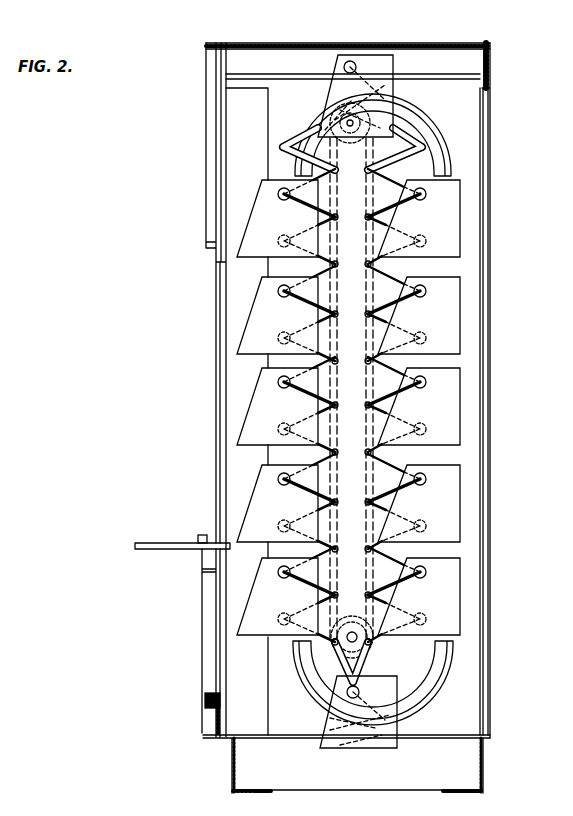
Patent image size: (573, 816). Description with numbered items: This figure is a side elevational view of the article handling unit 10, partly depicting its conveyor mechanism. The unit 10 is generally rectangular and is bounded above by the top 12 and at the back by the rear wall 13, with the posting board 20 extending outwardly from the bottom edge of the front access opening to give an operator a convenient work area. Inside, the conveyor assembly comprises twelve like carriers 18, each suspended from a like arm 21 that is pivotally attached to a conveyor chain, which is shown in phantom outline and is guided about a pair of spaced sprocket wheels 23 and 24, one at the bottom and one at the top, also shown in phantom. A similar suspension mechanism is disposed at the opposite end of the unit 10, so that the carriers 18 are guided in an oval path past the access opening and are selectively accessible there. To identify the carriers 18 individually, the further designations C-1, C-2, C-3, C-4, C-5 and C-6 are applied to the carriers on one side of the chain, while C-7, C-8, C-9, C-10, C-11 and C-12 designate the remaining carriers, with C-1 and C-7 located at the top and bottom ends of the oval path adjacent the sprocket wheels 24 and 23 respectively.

The article handling unit 10 is at (494, 177).
The top 12 is at (460, 44).
The rear wall 13 is at (490, 338).
The carriers 18 is at (359, 407).
The posting board 20 is at (153, 543).
The arm 21 is at (432, 158).
The sprocket wheel 23 is at (352, 630).
The sprocket wheel 24 is at (352, 136).
The carrier C-1 is at (355, 96).
The carrier C-2 is at (287, 218).
The carrier C-3 is at (287, 315).
The carrier C-4 is at (287, 406).
The carrier C-5 is at (287, 503).
The carrier C-6 is at (287, 596).
The carrier C-7 is at (358, 712).
The carrier C-8 is at (412, 596).
The carrier C-9 is at (412, 503).
The carrier C-10 is at (412, 406).
The carrier C-11 is at (412, 315).
The carrier C-12 is at (412, 218).